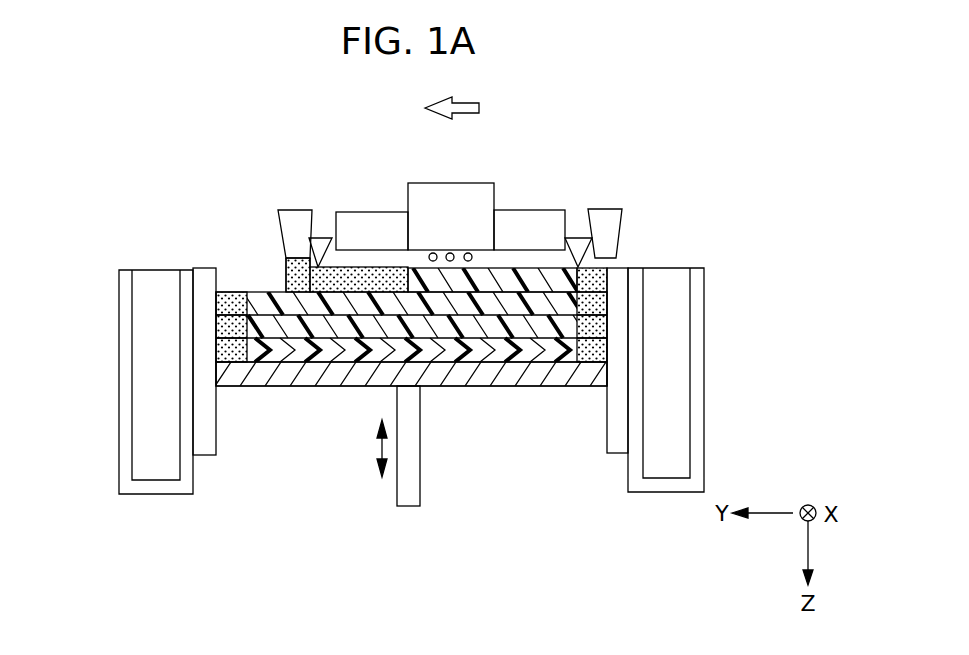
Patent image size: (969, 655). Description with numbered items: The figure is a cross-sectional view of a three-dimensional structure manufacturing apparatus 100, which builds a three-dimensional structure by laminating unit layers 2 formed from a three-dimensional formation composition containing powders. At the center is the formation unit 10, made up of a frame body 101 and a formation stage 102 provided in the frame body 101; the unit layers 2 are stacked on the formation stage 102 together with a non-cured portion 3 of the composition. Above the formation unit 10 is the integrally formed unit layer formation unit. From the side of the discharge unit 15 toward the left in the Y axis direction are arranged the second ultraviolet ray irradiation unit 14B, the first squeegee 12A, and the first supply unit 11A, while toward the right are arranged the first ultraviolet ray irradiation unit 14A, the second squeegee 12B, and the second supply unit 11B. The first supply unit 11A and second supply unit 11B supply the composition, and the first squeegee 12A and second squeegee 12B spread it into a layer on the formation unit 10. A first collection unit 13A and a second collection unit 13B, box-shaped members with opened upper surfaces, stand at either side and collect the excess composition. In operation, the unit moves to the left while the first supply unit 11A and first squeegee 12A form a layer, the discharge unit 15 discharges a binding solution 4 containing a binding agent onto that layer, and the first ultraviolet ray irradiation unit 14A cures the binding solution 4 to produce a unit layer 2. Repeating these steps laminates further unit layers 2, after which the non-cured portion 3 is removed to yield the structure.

The three-dimensional structure manufacturing apparatus 100 is at (712, 125).
The formation unit 10 is at (320, 420).
The unit layer 2 is at (500, 323).
The non-cured portion 3 is at (233, 350).
The binding solution 4 is at (468, 253).
The first supply unit 11A is at (295, 209).
The second supply unit 11B is at (622, 225).
The first squeegee 12A is at (321, 237).
The second squeegee 12B is at (577, 237).
The first collection unit 13A is at (123, 328).
The second collection unit 13B is at (697, 275).
The first ultraviolet ray irradiation unit 14A is at (552, 215).
The second ultraviolet ray irradiation unit 14B is at (379, 215).
The discharge unit 15 is at (450, 198).
The frame body 101 is at (212, 447).
The formation stage 102 is at (523, 372).